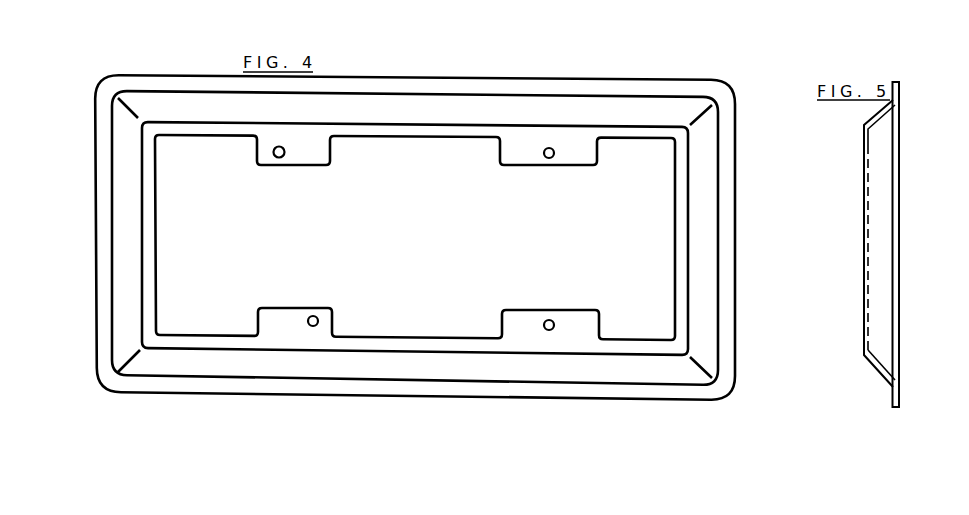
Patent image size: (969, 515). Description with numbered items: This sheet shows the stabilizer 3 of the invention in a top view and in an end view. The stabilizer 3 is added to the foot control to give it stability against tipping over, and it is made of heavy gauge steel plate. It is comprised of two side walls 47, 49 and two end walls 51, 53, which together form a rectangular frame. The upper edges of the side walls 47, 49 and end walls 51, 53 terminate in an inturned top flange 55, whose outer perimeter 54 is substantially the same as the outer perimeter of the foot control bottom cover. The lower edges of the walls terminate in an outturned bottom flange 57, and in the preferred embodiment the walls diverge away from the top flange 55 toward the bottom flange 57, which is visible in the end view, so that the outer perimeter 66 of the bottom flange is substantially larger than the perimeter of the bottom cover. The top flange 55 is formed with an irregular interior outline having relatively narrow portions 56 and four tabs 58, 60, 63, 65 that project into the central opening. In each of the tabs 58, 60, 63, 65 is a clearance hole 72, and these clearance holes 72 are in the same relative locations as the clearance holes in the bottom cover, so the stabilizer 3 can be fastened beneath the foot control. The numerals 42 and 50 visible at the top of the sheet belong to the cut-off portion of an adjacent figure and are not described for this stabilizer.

In FIG. 4, the stabilizer 3 is at (458, 70).
In FIG. 4, the cover plate 42 is at (780, 0).
In FIG. 4, the side wall 47 is at (413, 363).
In FIG. 4, the side wall 49 is at (382, 105).
In FIG. 4, the frame front face 50 is at (602, 0).
In FIG. 4, the end wall 51 is at (707, 268).
In FIG. 4, the end wall 53 is at (123, 175).
In FIG. 4, the outer perimeter of the top flange 54 is at (690, 157).
In FIG. 4, the top flange 55 is at (195, 128).
In FIG. 4, the narrow portion 56 is at (458, 131).
In FIG. 4, the bottom flange 57 is at (727, 203).
In FIG. 4, the tab 58 is at (568, 325).
In FIG. 4, the tab 60 is at (280, 320).
In FIG. 4, the tab 63 is at (303, 152).
In FIG. 4, the tab 65 is at (517, 152).
In FIG. 4, the outer perimeter of the bottom flange 66 is at (735, 335).
In FIG. 5, the outer perimeter of the bottom flange 66 is at (895, 82).
In FIG. 4, the clearance hole 72 is at (546, 158).